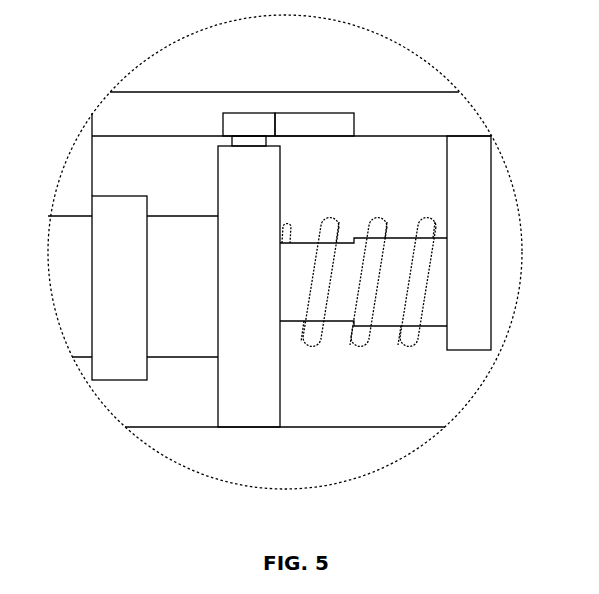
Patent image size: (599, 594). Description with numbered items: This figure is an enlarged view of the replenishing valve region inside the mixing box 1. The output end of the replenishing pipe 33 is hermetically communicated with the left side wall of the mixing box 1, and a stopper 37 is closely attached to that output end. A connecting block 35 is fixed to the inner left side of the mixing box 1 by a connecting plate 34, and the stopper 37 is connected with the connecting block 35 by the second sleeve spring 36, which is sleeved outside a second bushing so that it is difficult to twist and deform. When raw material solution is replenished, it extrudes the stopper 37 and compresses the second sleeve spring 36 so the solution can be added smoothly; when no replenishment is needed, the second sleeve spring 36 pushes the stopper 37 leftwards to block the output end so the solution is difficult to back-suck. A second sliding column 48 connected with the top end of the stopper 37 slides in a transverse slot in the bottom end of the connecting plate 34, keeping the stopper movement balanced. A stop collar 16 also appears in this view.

The mixing box 1 is at (77, 172).
The stop collar 16 is at (354, 457).
The replenishing pipe 33 is at (168, 330).
The connecting plate 34 is at (456, 113).
The connecting block 35 is at (481, 328).
The second sleeve spring 36 is at (409, 340).
The stopper 37 is at (252, 395).
The second sliding column 48 is at (234, 119).